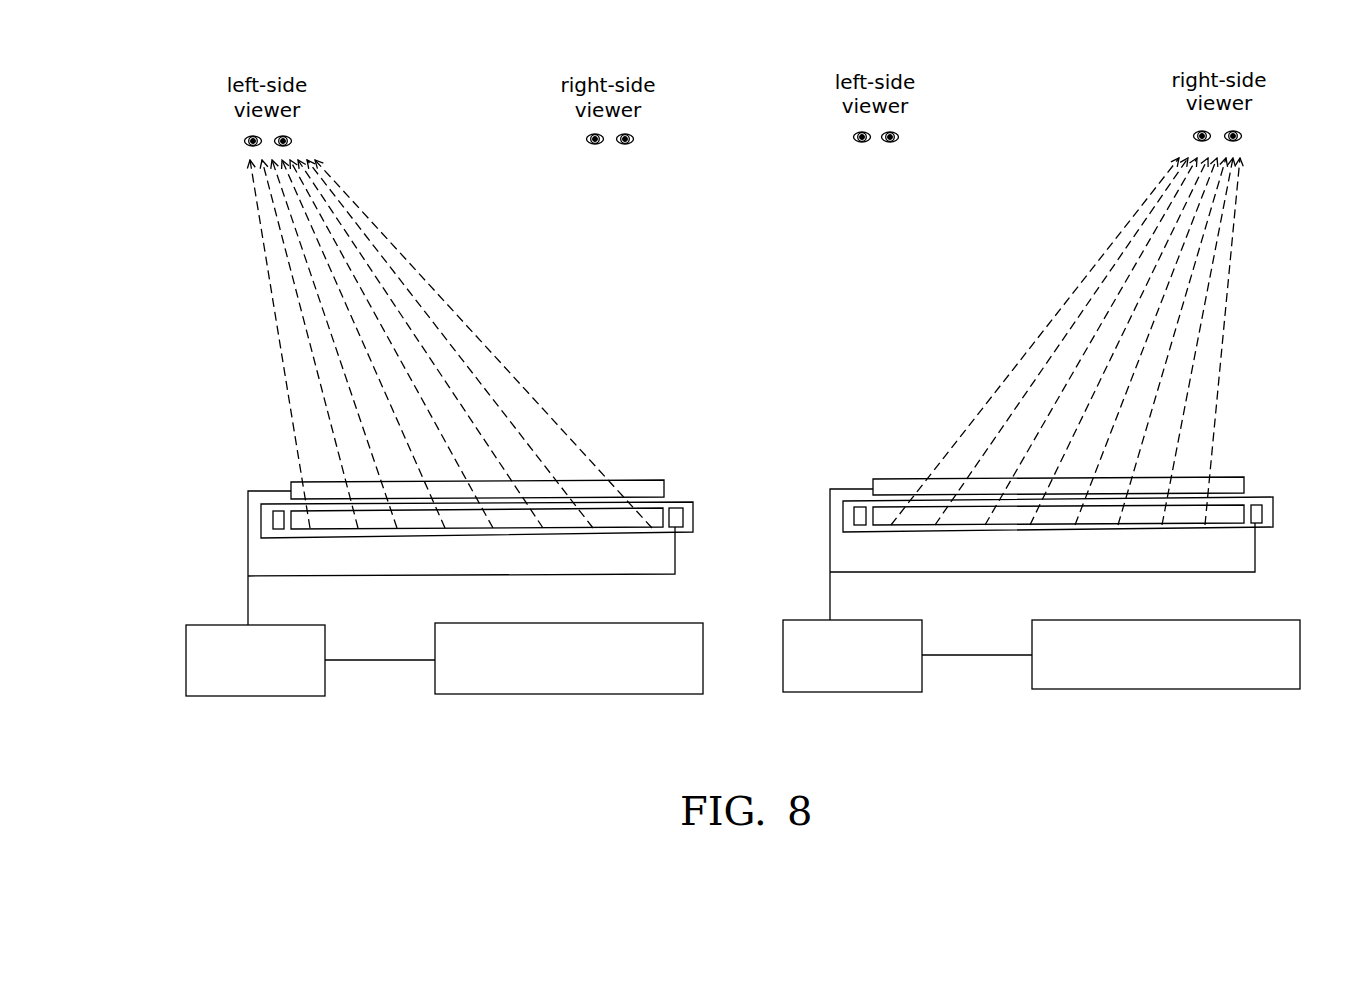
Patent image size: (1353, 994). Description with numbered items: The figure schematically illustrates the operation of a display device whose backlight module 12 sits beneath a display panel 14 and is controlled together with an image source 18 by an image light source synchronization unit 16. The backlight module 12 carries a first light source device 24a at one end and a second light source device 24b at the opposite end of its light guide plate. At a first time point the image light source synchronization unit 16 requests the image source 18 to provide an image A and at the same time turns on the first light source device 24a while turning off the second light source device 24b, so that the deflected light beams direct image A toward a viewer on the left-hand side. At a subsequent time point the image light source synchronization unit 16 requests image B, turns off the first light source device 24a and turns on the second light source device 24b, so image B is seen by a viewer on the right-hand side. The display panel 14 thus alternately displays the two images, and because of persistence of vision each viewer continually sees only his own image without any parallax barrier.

The backlight module 12 is at (674, 499).
The display panel 14 is at (620, 481).
The image light source synchronization unit 16 is at (557, 622).
The image source 18 is at (268, 624).
The first light source device 24a is at (681, 525).
The second light source device 24b is at (278, 519).